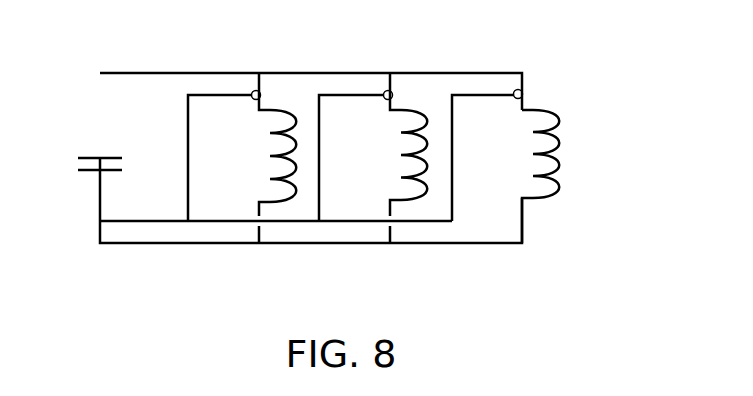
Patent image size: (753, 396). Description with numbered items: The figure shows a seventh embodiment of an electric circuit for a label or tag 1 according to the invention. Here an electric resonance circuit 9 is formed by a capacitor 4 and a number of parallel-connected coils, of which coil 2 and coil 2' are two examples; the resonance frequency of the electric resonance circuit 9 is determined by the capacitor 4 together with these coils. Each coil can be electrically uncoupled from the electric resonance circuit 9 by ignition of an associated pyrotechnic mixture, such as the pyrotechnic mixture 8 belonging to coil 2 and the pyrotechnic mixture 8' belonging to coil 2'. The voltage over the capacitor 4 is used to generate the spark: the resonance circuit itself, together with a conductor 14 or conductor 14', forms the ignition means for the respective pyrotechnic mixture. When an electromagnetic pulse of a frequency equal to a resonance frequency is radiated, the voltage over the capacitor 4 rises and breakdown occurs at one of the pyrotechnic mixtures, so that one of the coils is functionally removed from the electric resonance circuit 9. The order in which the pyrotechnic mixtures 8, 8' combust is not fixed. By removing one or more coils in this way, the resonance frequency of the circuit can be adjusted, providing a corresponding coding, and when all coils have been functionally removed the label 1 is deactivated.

The lighting/ballast circuit 1 is at (618, 289).
The coil 2 is at (280, 122).
The coil 2' is at (408, 122).
The capacitor 4 is at (85, 171).
The pyrotechnic mixture 8 is at (233, 50).
The pyrotechnic mixture 8' is at (364, 50).
The electric resonance circuit 9 is at (343, 176).
The conductor 14 is at (184, 201).
The conductor 14' is at (322, 201).